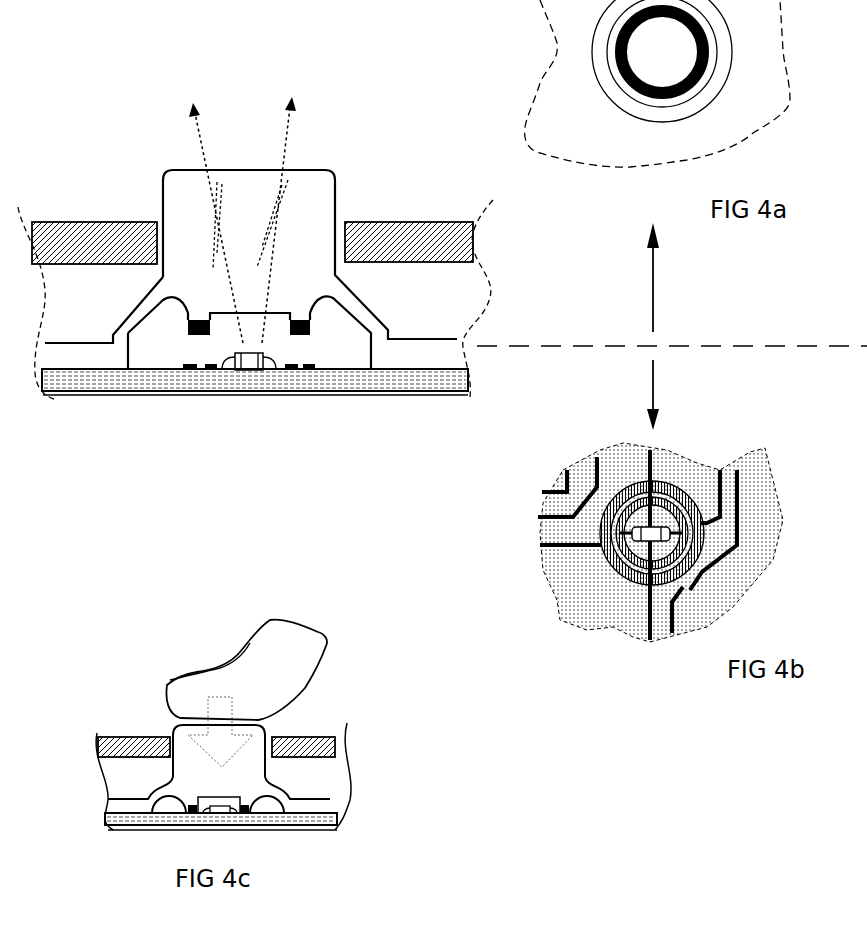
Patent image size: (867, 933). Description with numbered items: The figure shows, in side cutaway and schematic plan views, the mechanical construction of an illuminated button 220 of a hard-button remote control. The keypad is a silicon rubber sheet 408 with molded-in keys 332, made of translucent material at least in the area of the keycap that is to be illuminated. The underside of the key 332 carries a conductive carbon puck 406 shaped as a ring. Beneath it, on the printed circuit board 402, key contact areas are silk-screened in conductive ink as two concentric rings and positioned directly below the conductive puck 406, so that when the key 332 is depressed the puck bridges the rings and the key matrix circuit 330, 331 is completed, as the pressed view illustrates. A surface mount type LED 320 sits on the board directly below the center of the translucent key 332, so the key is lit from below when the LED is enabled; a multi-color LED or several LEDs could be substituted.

In FIG. 4a, the illuminated button 220 is at (230, 78).
In FIG. 4a, the surface mount type LED 320 is at (250, 367).
In FIG. 4b, the surface mount type LED 320 is at (632, 533).
In FIG. 4a, the key matrix circuit 330 is at (325, 368).
In FIG. 4b, the key matrix circuit 330 is at (618, 577).
In FIG. 4b, the key contact area 331 is at (504, 505).
In FIG. 4a, the key 332 is at (600, 40).
In FIG. 4a, the printed circuit board 402 is at (416, 378).
In FIG. 4b, the printed circuit board 402 is at (553, 487).
In FIG. 4a, the conductive carbon puck 406 is at (617, 53).
In FIG. 4a, the silicon rubber sheet 408 is at (603, 137).